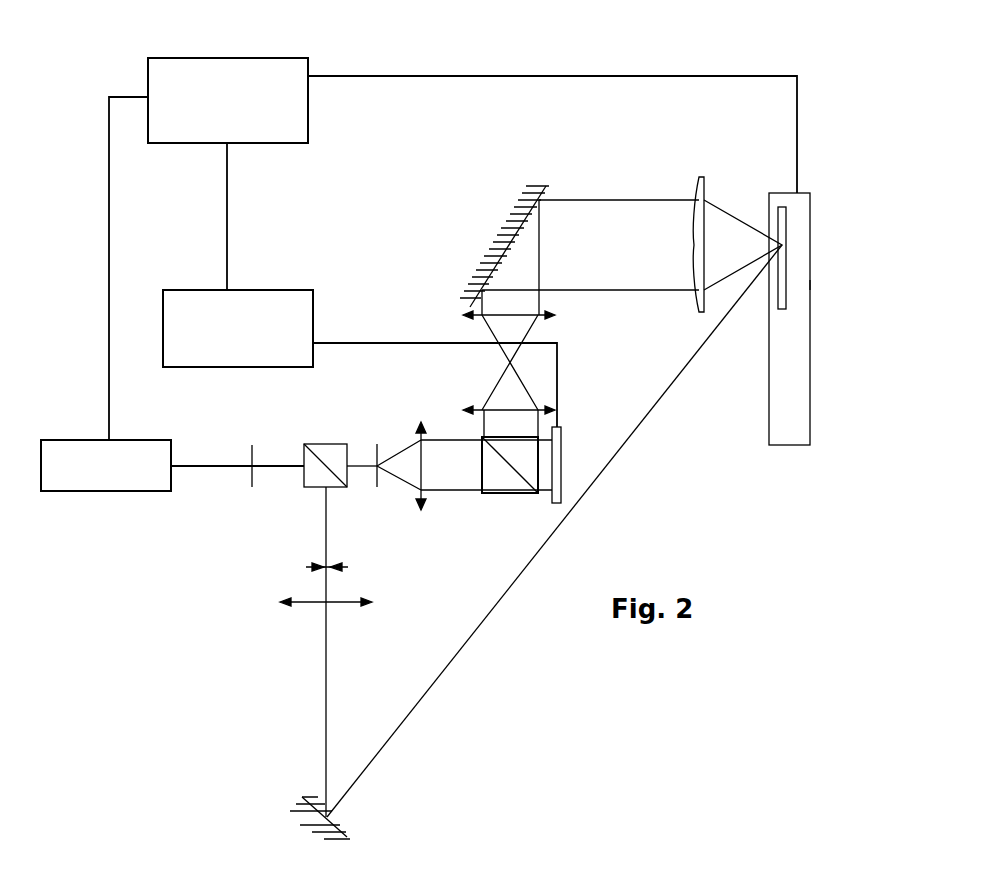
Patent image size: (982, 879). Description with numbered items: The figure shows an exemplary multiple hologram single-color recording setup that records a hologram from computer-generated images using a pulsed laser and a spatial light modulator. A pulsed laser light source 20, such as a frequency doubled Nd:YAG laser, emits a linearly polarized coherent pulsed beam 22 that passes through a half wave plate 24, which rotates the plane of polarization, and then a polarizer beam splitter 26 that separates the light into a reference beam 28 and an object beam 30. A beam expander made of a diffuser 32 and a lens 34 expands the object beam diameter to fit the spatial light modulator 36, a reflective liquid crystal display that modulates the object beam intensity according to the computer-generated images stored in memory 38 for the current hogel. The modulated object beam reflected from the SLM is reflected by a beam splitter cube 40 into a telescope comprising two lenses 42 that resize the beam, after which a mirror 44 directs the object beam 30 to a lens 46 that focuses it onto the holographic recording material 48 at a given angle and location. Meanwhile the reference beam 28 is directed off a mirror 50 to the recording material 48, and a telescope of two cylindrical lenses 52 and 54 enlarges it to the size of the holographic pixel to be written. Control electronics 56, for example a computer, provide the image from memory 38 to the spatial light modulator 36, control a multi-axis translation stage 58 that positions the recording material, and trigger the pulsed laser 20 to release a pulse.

The pulsed laser light source 20 is at (115, 491).
The pulsed beam 22 is at (178, 467).
The half wave plate 24 is at (251, 454).
The polarizer beam splitter 26 is at (304, 450).
The reference beam 28 is at (476, 640).
The object beam 30 is at (580, 290).
The diffuser 32 is at (377, 447).
The lens 34 is at (421, 430).
The spatial light modulator 36 is at (562, 434).
The memory 38 is at (258, 290).
The beam splitter cube 40 is at (498, 495).
The lenses 42 is at (483, 320).
The mirror 44 is at (480, 259).
The lens 46 is at (698, 183).
The holographic recording material 48 is at (801, 302).
The mirror 50 is at (313, 818).
The cylindrical lens 52 is at (309, 567).
The cylindrical lens 54 is at (291, 601).
The control electronics 56 is at (240, 58).
The multi-axis translation stage 58 is at (811, 283).